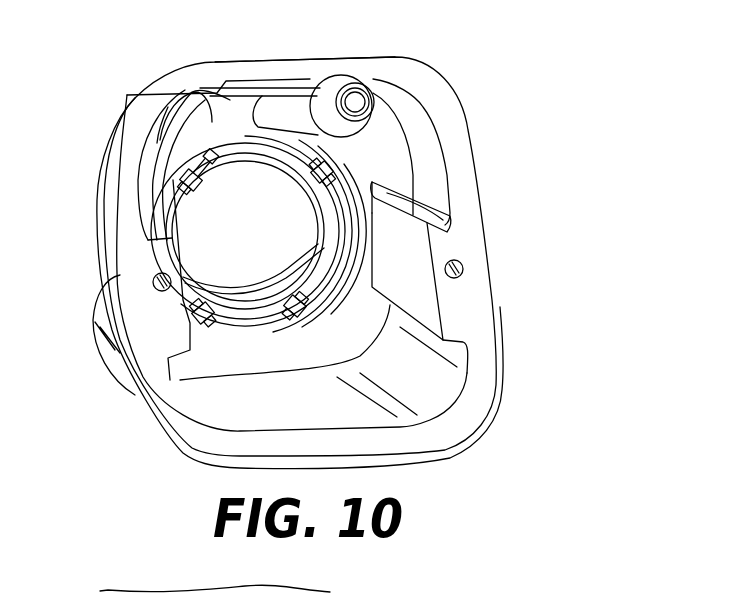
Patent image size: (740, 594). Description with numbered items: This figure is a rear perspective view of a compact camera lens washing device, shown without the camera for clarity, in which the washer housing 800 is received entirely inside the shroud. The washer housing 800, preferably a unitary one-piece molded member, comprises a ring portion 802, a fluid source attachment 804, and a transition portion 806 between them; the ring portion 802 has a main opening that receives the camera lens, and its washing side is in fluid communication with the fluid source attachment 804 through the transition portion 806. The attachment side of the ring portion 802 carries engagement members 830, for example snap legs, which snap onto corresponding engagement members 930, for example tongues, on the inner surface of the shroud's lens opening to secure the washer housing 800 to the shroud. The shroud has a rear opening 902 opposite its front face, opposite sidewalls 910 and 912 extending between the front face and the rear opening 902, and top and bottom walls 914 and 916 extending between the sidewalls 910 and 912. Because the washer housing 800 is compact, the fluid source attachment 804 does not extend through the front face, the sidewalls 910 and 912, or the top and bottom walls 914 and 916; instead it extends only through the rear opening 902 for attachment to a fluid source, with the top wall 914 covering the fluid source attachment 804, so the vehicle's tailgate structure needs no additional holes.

The washer housing 800 is at (330, 278).
The ring portion 802 is at (342, 248).
The fluid source attachment 804 is at (300, 98).
The transition portion 806 is at (150, 96).
The engagement members 830 is at (297, 307).
The rear opening 902 is at (460, 396).
The sidewall 910 is at (500, 308).
The sidewall 912 is at (103, 283).
The top wall 914 is at (370, 57).
The bottom wall 916 is at (402, 461).
The engagement members 930 is at (372, 206).